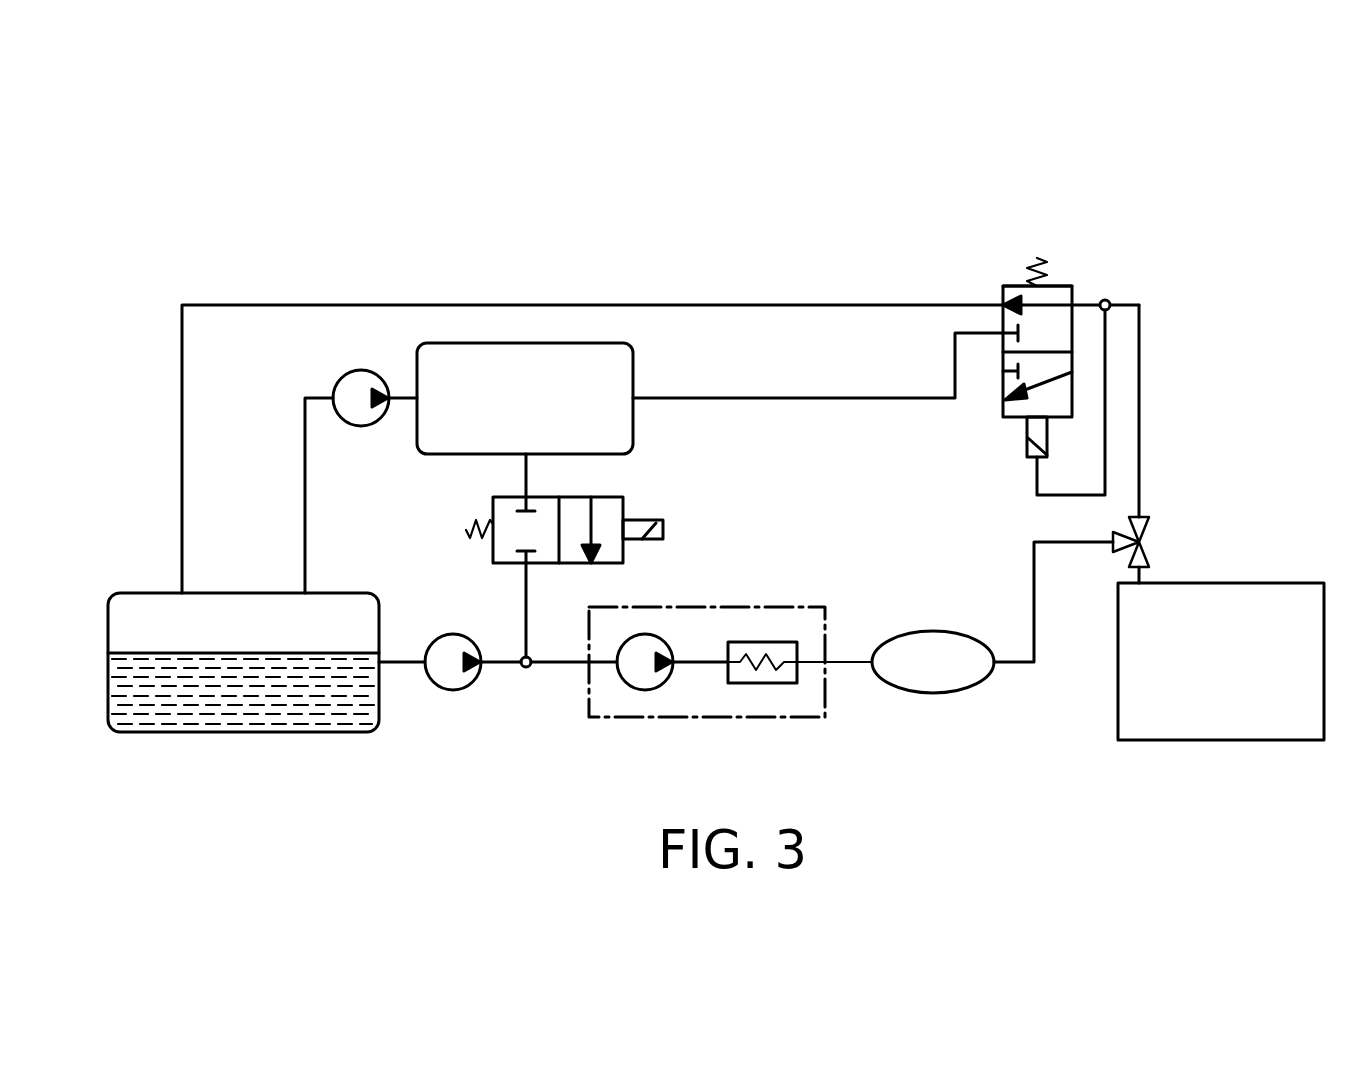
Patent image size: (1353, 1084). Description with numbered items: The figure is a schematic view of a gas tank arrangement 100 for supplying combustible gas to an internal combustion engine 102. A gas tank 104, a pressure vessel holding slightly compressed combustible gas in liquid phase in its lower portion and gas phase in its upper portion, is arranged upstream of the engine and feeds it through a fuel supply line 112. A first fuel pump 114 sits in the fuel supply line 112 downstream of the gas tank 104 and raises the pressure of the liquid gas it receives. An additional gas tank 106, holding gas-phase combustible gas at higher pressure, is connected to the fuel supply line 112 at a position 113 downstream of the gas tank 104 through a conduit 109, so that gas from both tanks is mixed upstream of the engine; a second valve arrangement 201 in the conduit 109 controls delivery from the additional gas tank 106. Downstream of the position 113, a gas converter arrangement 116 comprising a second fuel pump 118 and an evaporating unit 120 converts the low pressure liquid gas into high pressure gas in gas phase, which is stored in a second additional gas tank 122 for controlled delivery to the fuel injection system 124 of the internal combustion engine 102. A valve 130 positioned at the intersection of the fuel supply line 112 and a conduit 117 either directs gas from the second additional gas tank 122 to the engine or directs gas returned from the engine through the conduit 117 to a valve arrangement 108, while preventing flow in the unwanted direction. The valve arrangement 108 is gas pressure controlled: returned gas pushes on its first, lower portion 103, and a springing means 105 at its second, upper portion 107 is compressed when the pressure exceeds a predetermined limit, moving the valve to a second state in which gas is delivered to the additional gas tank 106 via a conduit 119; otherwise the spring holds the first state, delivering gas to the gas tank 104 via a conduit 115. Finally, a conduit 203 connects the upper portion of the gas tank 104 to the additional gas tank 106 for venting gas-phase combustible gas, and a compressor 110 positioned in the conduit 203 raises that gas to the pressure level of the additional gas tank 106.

The gas tank arrangement 100 is at (190, 212).
The internal combustion engine 102 is at (1218, 740).
The first, lower portion 103 is at (1047, 457).
The gas tank 104 is at (238, 732).
The springing means 105 is at (1037, 268).
The additional gas tank 106 is at (533, 343).
The second, upper portion 107 is at (1056, 286).
The valve arrangement 108 is at (1066, 286).
The conduit 109 is at (524, 610).
The compressor 110 is at (366, 370).
The fuel supply line 112 is at (557, 665).
The position 113 is at (526, 668).
The first fuel pump 114 is at (450, 690).
The conduit 115 is at (447, 306).
The gas converter arrangement 116 is at (805, 717).
The conduit 117 is at (1140, 356).
The second fuel pump 118 is at (645, 690).
The conduit 119 is at (785, 398).
The evaporating unit 120 is at (762, 683).
The second additional gas tank 122 is at (933, 693).
The fuel injection system 124 is at (1143, 582).
The valve 130 is at (1145, 532).
The second valve arrangement 201 is at (623, 510).
The conduit 203 is at (297, 493).